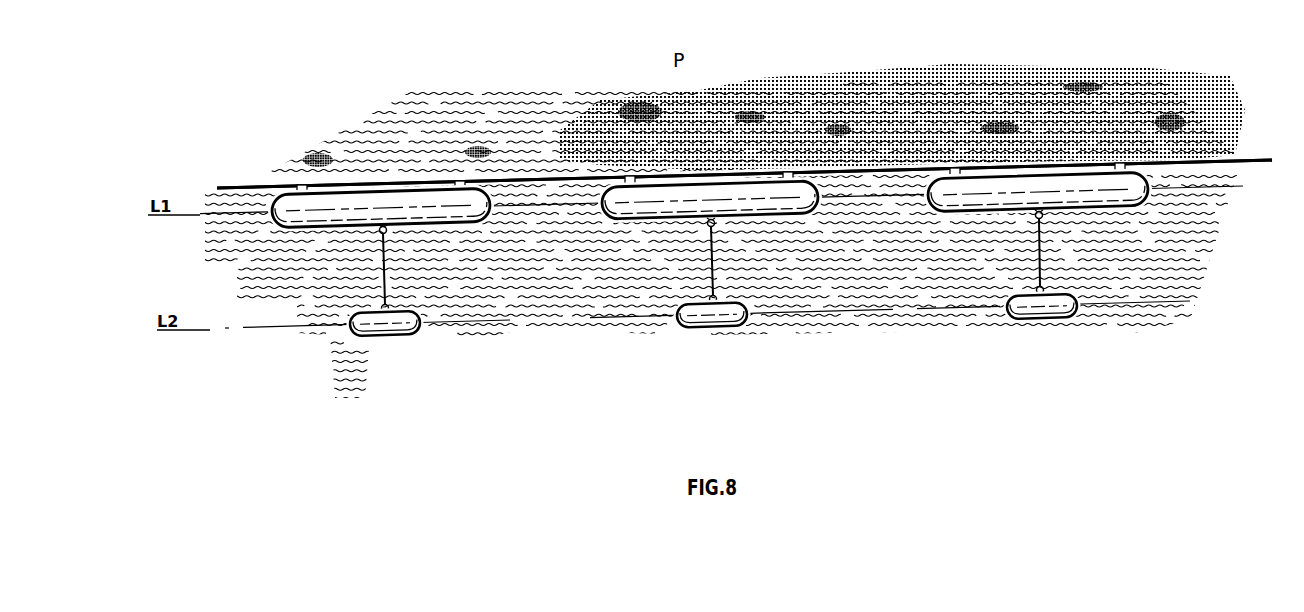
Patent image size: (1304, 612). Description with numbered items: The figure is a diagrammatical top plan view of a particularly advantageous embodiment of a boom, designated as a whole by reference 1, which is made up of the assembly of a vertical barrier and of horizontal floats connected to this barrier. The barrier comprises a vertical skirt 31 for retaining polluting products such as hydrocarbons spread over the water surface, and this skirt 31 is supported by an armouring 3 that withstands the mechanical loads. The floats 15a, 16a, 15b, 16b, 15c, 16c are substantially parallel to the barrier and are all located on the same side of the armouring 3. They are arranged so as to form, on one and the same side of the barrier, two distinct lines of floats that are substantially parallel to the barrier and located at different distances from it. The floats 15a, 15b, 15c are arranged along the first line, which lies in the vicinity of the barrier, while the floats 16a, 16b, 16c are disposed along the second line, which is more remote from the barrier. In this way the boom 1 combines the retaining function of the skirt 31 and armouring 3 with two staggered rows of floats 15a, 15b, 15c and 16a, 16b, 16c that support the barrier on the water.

The boom 1 is at (243, 173).
The armouring 3 is at (1241, 156).
The vertical skirt 31 is at (744, 174).
The float 15a is at (333, 229).
The float 15b is at (652, 222).
The float 15c is at (1000, 214).
The float 16a is at (388, 336).
The float 16b is at (720, 327).
The float 16c is at (1046, 319).